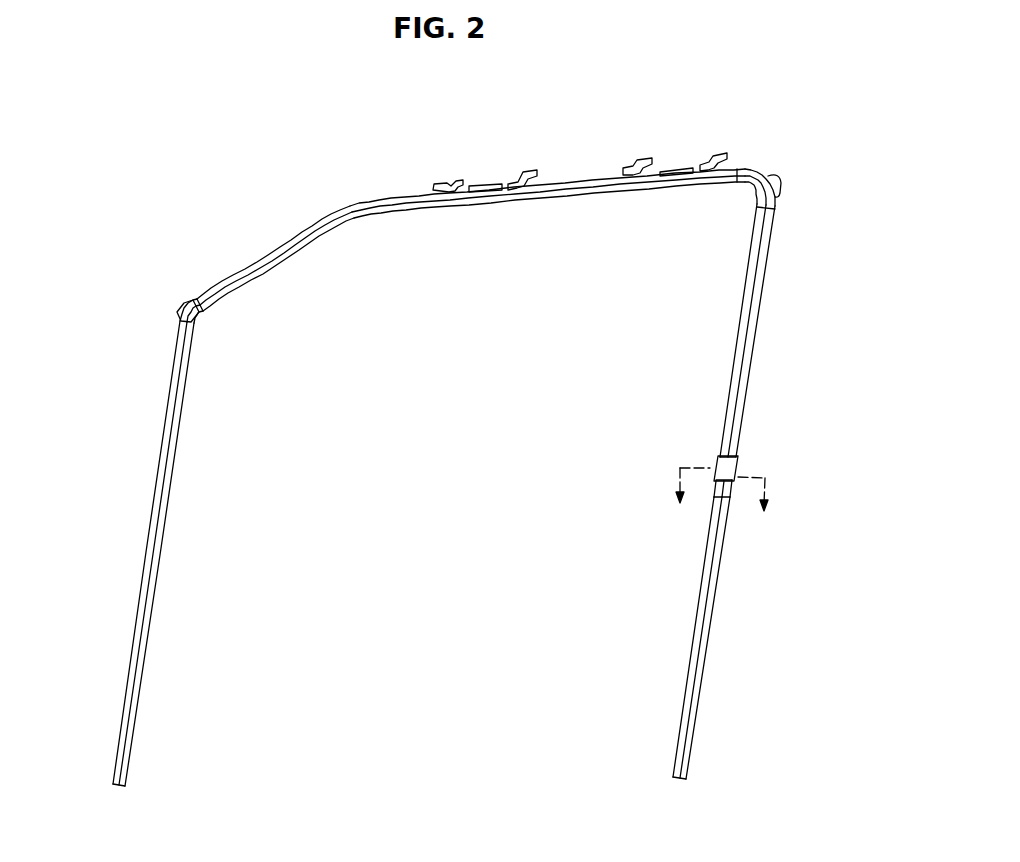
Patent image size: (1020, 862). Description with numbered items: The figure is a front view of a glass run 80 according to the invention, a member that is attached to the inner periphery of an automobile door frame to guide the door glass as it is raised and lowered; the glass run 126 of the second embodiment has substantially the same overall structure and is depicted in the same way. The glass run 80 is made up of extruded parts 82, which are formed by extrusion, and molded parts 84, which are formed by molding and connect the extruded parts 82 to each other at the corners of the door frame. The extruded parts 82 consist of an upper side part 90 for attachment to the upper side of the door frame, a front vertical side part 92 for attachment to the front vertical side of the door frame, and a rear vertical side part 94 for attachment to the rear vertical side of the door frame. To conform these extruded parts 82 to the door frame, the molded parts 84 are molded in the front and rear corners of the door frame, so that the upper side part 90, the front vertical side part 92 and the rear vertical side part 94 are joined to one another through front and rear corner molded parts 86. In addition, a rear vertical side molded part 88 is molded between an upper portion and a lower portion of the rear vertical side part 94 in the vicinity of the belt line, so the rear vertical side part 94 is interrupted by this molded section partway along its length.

The glass run 80 is at (258, 748).
The glass run 126 is at (447, 506).
The extruded parts 82 is at (395, 196).
The molded parts 84 is at (193, 303).
The corner molded parts 86 is at (206, 318).
The rear vertical side molded part 88 is at (718, 462).
The upper side part 90 is at (330, 225).
The front vertical side part 92 is at (158, 605).
The rear vertical side part 94 is at (710, 582).